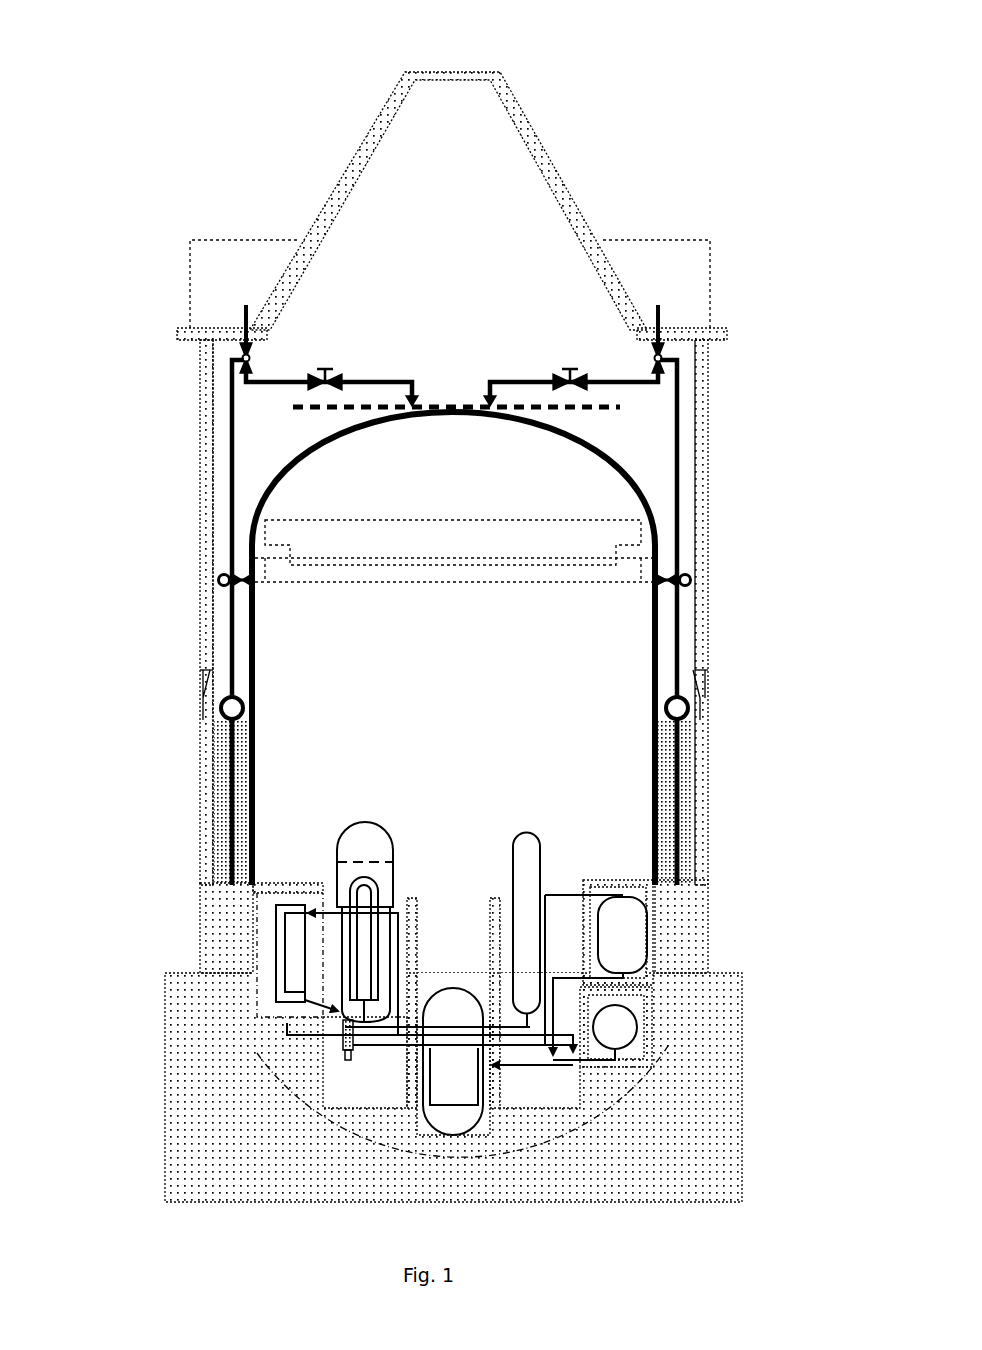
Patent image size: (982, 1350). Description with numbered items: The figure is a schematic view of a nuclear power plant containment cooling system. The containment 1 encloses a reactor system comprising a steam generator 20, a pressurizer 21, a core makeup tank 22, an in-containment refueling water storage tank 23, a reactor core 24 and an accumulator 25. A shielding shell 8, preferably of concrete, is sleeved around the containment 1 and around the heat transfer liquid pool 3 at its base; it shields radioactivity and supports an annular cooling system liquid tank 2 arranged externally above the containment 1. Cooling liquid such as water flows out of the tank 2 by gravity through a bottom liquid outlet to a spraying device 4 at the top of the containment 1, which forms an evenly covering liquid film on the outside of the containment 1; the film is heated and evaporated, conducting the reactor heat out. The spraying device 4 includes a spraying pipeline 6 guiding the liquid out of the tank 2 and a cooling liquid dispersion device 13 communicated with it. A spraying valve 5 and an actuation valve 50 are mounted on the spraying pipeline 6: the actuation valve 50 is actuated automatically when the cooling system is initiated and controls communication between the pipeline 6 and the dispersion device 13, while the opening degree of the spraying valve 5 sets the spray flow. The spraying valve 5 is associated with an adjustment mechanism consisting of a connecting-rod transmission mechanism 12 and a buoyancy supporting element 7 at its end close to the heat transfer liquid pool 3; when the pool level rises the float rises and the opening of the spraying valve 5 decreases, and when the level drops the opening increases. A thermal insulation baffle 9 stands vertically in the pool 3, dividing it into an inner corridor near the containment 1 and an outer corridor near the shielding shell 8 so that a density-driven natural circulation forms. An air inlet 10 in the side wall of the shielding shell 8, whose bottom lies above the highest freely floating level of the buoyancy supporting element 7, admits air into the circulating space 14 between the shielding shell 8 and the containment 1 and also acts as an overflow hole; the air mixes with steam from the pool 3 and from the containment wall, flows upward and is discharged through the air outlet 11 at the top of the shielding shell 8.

The containment 1 is at (300, 455).
The cooling system liquid tank 2 is at (232, 240).
The heat transfer liquid pool 3 is at (208, 753).
The spraying device 4 is at (330, 372).
The spraying valve 5 is at (665, 370).
The spraying pipeline 6 is at (243, 325).
The buoyancy supporting element 7 is at (227, 700).
The shielding shell 8 is at (208, 515).
The thermal insulation baffle 9 is at (222, 802).
The air inlet 10 is at (708, 682).
The air outlet 11 is at (442, 72).
The connecting-rod transmission mechanism 12 is at (232, 480).
The cooling liquid dispersion device 13 is at (572, 405).
The circulating space 14 is at (230, 580).
The steam generator 20 is at (365, 833).
The pressurizer 21 is at (535, 832).
The core makeup tank 22 is at (625, 935).
The in-containment refueling water storage tank 23 is at (267, 970).
The reactor core 24 is at (495, 1070).
The accumulator 25 is at (613, 1027).
The actuation valve 50 is at (562, 372).